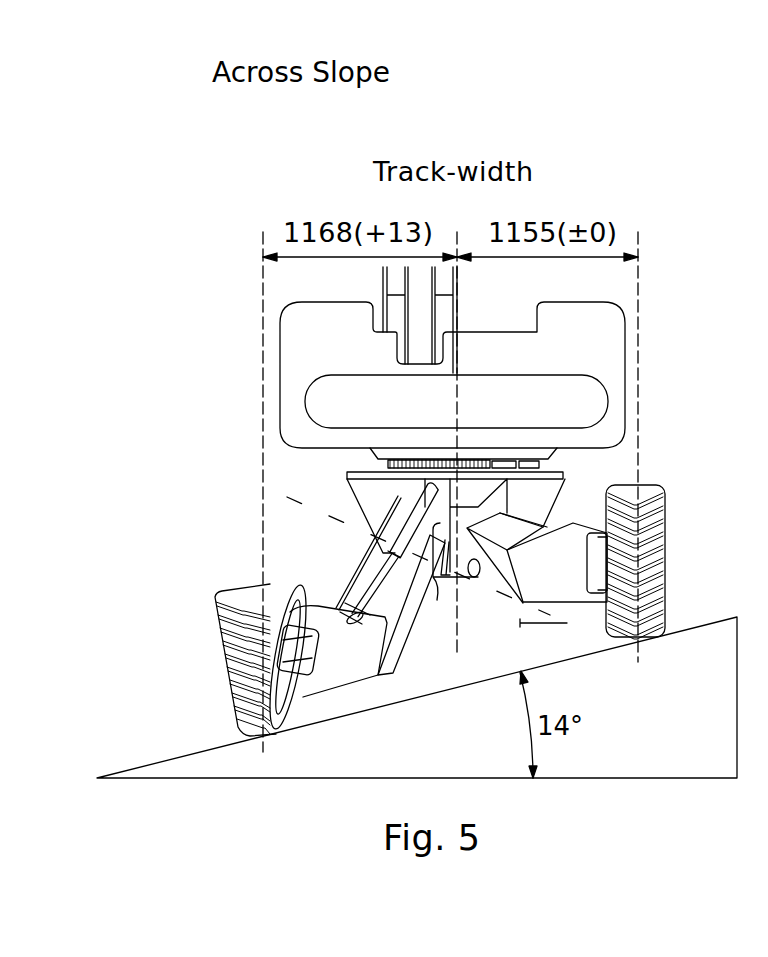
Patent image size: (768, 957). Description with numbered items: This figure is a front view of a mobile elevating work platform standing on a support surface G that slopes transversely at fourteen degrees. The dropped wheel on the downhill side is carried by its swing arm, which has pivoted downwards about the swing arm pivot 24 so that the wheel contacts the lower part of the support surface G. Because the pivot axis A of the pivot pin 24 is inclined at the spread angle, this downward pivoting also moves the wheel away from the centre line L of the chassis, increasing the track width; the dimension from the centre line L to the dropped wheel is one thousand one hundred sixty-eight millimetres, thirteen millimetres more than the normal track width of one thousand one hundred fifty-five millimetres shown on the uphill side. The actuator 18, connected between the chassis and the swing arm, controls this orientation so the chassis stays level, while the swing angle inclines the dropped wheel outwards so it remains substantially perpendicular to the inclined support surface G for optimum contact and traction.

The actuator 18 is at (377, 573).
The swing arm pivot 24 is at (447, 585).
The pivot axis A is at (328, 512).
The support surface G is at (170, 762).
The centre line L is at (520, 623).